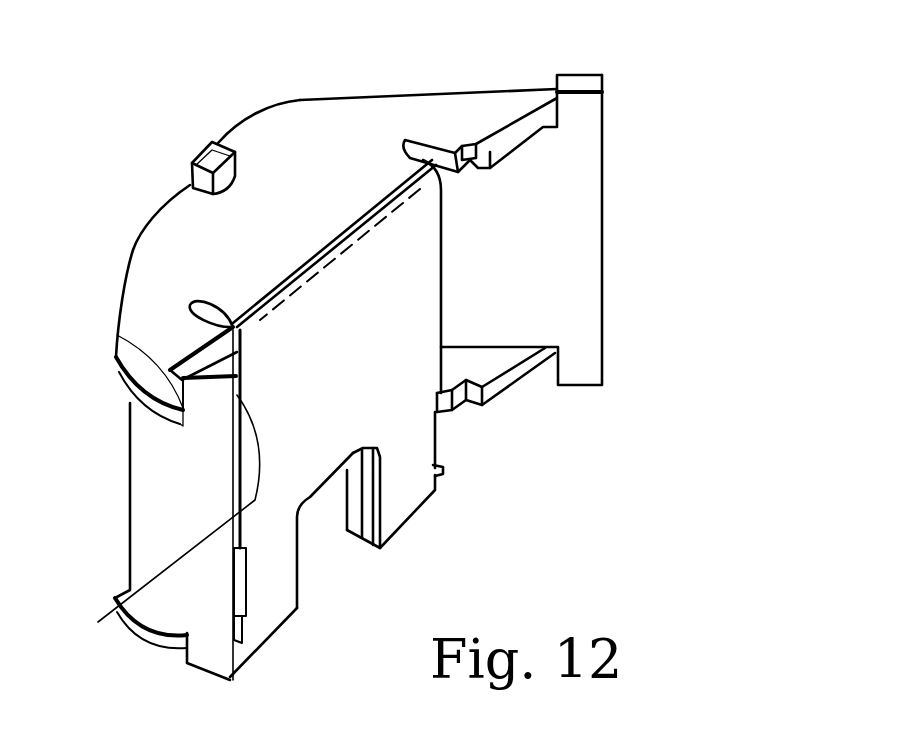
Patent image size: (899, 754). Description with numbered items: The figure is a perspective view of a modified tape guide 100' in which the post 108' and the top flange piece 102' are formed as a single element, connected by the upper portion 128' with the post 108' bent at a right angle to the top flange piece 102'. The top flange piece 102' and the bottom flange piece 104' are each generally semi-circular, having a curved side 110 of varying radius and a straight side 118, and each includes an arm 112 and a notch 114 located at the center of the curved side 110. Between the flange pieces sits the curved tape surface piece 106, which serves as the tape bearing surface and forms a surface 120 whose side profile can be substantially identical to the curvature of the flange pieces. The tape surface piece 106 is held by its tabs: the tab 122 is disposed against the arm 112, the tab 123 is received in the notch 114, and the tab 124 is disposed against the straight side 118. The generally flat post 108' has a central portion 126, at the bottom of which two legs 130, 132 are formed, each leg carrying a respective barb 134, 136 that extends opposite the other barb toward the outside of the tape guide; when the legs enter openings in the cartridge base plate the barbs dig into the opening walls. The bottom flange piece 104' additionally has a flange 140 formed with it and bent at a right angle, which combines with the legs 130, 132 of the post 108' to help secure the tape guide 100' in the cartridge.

The tape guide 100' is at (466, 230).
The top flange piece 102' is at (426, 71).
The bottom flange piece 104' is at (568, 390).
The tape surface piece 106 is at (147, 477).
The post 108' is at (490, 276).
The curved side 110 is at (270, 108).
The arm 112 is at (165, 390).
The notch 114 is at (192, 185).
The straight side 118 is at (527, 140).
The surface 120 is at (200, 455).
The tab 122 is at (205, 670).
The tab 123 is at (208, 155).
The tab 124 is at (587, 105).
The central portion 126 is at (385, 390).
The upper portion 128' is at (313, 239).
The leg 130 is at (272, 585).
The leg 132 is at (400, 498).
The barb 134 is at (247, 633).
The barb 136 is at (437, 490).
The flange 140 is at (353, 523).